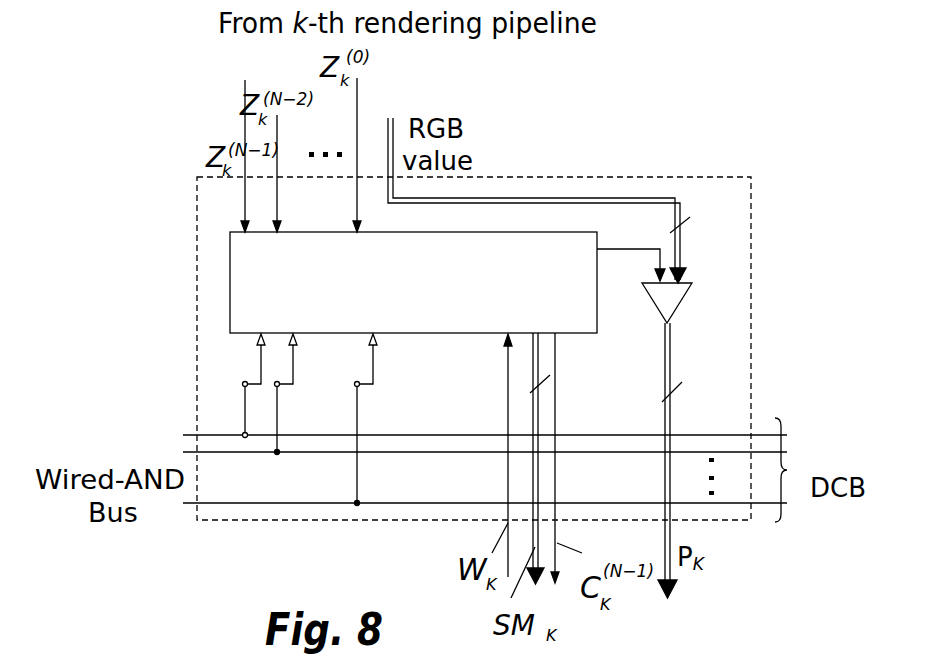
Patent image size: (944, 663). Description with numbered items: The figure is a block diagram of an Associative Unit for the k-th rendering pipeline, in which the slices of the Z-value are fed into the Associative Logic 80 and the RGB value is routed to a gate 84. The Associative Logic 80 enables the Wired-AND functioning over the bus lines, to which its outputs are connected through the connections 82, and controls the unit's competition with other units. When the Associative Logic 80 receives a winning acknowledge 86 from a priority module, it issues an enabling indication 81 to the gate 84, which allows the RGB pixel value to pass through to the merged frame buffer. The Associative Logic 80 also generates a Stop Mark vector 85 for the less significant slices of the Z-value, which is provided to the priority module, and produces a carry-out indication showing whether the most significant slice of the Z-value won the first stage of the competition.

The Associative Logic 80 is at (230, 334).
The enabling indication 81 is at (646, 247).
The wired-AND bus connections 82 is at (376, 373).
The gate 84 is at (652, 305).
The Stop Mark vector 85 is at (540, 415).
The winning acknowledge 86 is at (505, 418).